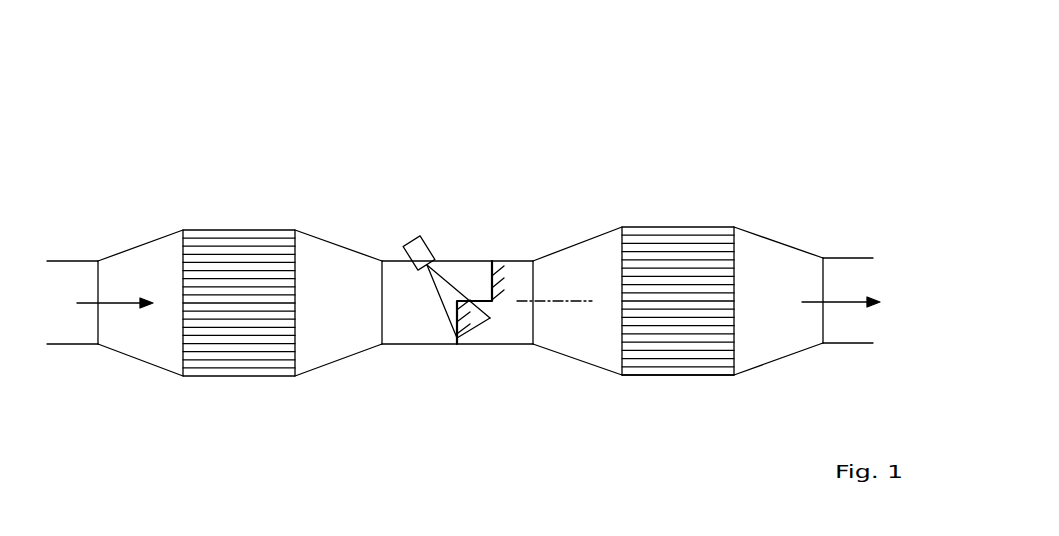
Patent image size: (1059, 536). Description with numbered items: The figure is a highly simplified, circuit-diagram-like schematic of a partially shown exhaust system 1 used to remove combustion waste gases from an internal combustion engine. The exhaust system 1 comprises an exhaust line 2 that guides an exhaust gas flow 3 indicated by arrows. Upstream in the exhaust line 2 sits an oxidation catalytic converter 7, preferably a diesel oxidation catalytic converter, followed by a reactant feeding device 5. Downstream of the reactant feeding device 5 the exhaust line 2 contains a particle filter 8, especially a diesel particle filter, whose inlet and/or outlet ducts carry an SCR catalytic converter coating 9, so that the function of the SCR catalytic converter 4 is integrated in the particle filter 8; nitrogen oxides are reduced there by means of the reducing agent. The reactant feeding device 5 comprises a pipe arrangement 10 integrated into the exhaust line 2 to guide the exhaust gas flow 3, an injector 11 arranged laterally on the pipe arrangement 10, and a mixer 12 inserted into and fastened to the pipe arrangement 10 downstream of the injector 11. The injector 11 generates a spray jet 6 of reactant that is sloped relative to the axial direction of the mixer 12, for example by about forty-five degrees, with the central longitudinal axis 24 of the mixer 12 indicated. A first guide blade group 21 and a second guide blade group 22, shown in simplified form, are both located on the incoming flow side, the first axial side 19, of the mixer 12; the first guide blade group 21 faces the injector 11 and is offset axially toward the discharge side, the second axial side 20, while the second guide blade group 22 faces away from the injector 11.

The exhaust system 1 is at (784, 152).
The exhaust line 2 is at (340, 178).
The exhaust gas flow 3 is at (117, 300).
The SCR catalytic converter 4 is at (666, 216).
The reactant feeding device 5 is at (443, 214).
The spray jet 6 is at (435, 288).
The oxidation catalytic converter 7 is at (243, 218).
The particle filter 8 is at (668, 386).
The SCR catalytic converter coating 9 is at (700, 255).
The pipe arrangement 10 is at (470, 257).
The injector 11 is at (416, 237).
The mixer 12 is at (510, 250).
The first axial side 19 is at (453, 318).
The second axial side 20 is at (535, 317).
The first guide blade group 21 is at (498, 296).
The second guide blade group 22 is at (460, 345).
The central longitudinal axis 24 is at (563, 300).